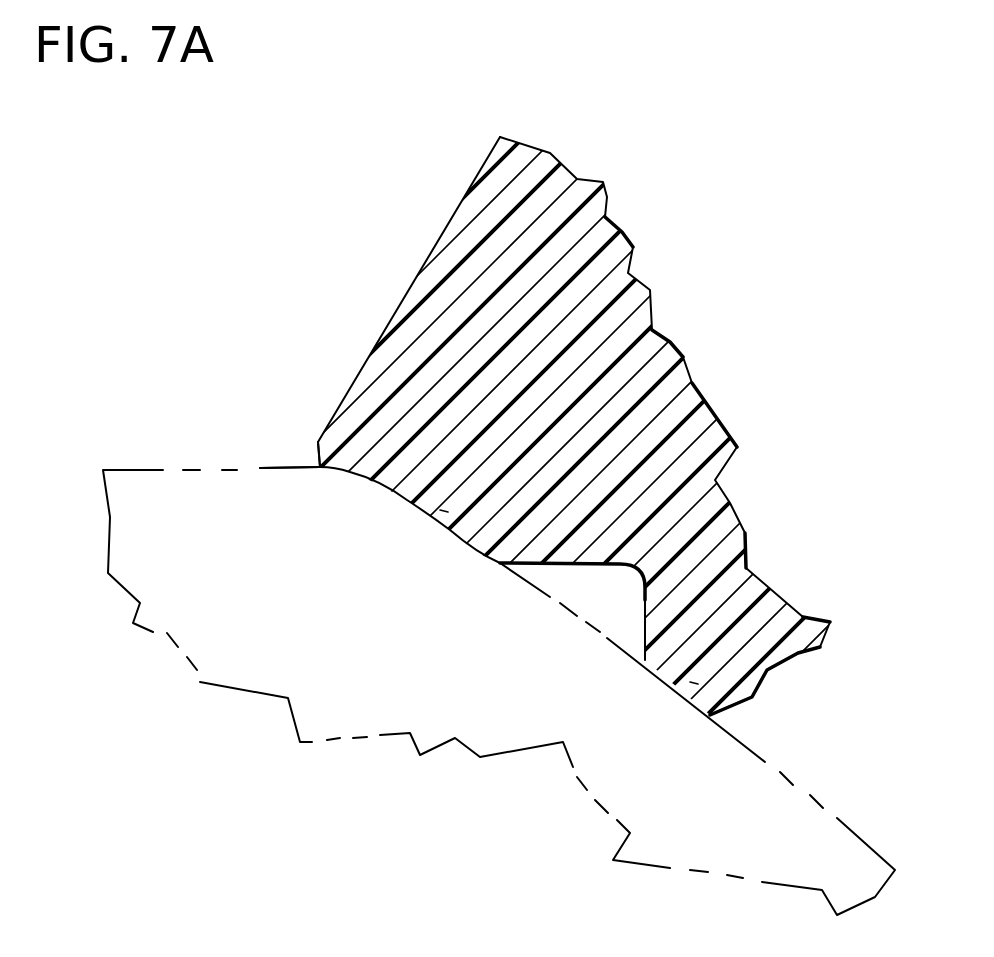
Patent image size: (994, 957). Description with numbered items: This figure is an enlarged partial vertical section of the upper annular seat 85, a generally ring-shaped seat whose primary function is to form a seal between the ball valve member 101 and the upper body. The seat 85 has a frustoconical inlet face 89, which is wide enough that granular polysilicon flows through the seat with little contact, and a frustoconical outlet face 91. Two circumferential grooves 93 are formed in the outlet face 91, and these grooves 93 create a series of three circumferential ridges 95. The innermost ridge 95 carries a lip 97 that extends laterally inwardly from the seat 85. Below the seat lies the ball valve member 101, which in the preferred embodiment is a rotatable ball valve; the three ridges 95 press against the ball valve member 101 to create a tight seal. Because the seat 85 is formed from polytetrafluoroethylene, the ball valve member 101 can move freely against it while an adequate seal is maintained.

The upper annular seat 85 is at (647, 350).
The frustoconical inlet face 89 is at (440, 237).
The frustoconical outlet face 91 is at (382, 488).
The circumferential groove 93 is at (630, 570).
The circumferential ridge 95 is at (447, 508).
The lip 97 is at (323, 477).
The ball valve member 101 is at (458, 693).